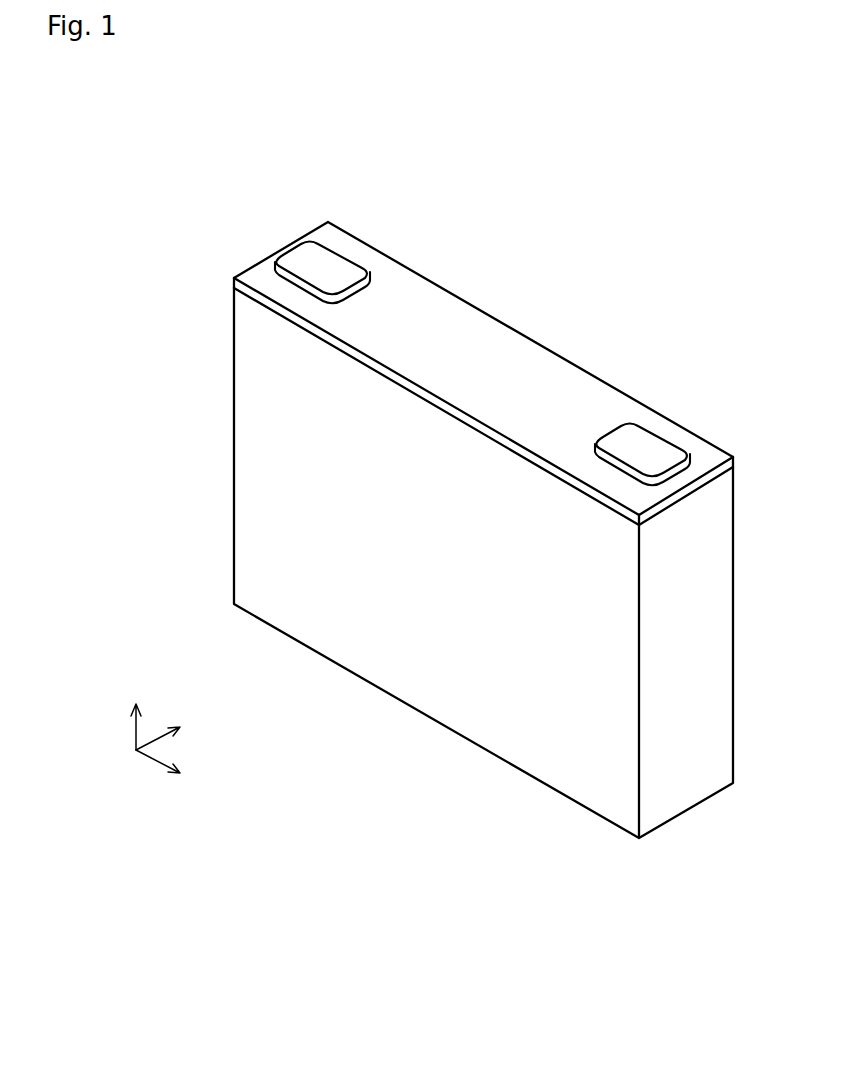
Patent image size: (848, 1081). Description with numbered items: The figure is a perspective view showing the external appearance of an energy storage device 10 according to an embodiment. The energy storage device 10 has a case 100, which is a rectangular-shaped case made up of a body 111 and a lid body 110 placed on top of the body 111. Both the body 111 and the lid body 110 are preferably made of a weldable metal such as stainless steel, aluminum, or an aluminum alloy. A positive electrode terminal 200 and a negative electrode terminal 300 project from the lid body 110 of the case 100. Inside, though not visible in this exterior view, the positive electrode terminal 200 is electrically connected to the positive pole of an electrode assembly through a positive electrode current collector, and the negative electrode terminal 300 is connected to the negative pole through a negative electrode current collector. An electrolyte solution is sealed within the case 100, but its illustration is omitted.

The energy storage device 10 is at (632, 226).
The case 100 is at (161, 388).
The lid body 110 is at (385, 343).
The body 111 is at (258, 444).
The positive electrode terminal 200 is at (332, 262).
The negative electrode terminal 300 is at (648, 447).